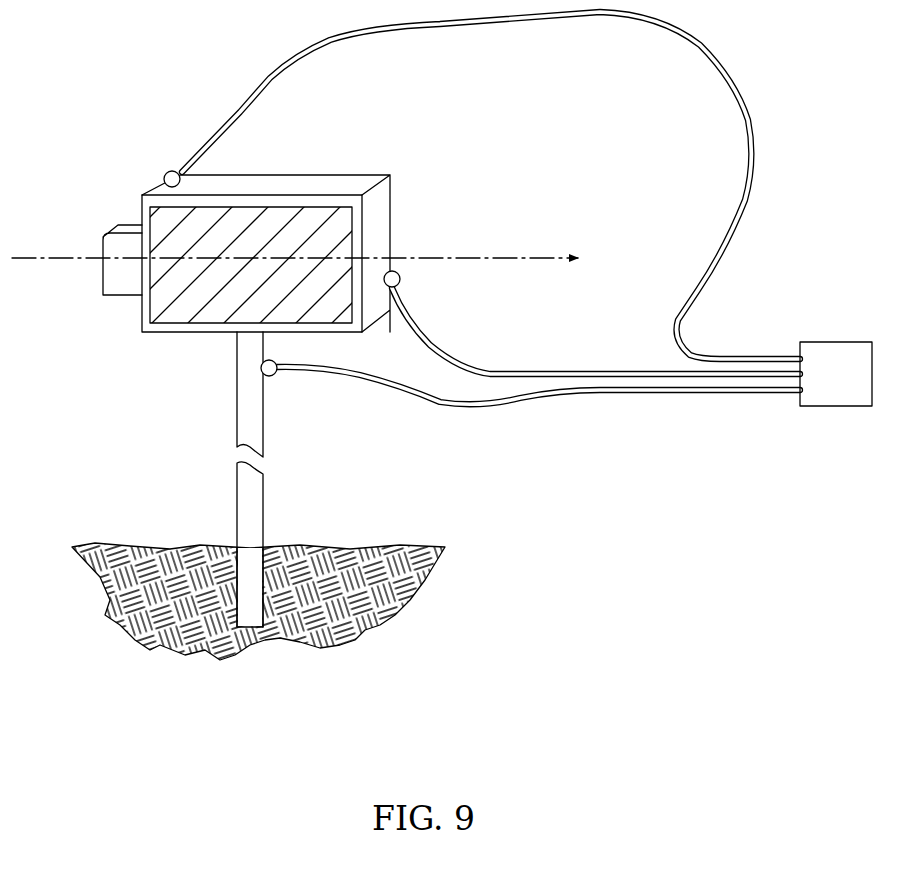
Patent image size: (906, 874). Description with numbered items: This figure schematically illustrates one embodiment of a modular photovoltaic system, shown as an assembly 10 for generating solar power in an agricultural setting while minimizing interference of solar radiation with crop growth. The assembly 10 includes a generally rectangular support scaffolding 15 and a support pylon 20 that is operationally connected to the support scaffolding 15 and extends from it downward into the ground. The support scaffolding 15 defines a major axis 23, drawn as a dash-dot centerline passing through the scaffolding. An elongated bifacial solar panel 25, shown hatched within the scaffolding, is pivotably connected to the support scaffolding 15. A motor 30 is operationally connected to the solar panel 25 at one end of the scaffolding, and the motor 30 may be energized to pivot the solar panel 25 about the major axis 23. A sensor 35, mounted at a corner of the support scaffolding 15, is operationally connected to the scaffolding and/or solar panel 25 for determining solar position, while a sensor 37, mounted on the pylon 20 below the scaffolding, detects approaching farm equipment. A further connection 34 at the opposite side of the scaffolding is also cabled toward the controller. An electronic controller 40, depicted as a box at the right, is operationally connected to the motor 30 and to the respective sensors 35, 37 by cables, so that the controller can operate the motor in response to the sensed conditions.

The assembly 10 is at (480, 160).
The support scaffolding 15 is at (380, 200).
The support pylon 20 is at (265, 500).
The major axis 23 is at (532, 260).
The elongated bifacial solar panel 25 is at (243, 210).
The motor 30 is at (103, 240).
The cable connector 34 is at (401, 280).
The sensor 35 is at (166, 173).
The sensor 37 is at (276, 376).
The electronic controller 40 is at (836, 374).